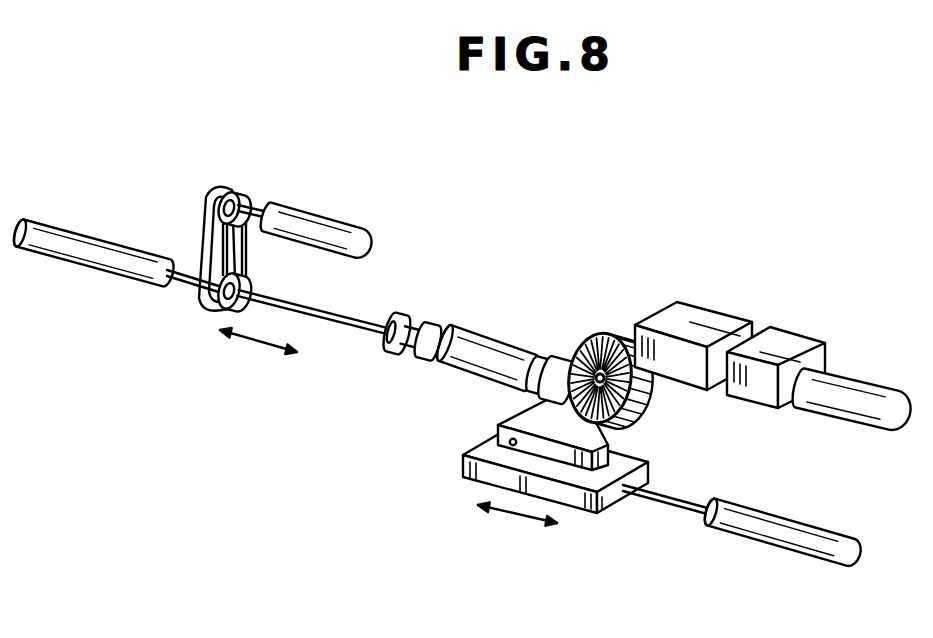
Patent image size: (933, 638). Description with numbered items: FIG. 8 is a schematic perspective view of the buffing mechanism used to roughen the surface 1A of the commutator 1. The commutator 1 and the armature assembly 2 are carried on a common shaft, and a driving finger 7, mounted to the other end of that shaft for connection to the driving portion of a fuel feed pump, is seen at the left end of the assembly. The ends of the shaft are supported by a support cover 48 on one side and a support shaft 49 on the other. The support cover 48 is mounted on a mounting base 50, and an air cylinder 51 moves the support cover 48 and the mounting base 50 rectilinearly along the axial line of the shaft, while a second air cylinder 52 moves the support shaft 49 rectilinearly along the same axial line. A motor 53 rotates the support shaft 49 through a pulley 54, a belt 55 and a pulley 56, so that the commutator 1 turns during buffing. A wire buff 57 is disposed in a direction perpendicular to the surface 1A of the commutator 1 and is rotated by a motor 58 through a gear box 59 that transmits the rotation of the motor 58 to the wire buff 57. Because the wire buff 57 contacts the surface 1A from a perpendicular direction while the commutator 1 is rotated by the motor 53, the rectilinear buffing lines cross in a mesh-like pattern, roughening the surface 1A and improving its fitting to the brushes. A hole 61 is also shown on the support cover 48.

The commutator 1 is at (505, 368).
The surface of the commutator 1A is at (562, 350).
The armature assembly 2 is at (490, 324).
The driving finger 7 is at (432, 320).
The support cover 48 is at (605, 430).
The support shaft 49 is at (350, 338).
The mounting base 50 is at (610, 504).
The air cylinder 51 is at (762, 543).
The air cylinder 52 is at (100, 272).
The motor 53 is at (326, 212).
The pulley 54 is at (236, 196).
The belt 55 is at (201, 228).
The pulley 56 is at (227, 308).
The wire buff 57 is at (600, 334).
The motor 58 is at (852, 370).
The gear box 59 is at (705, 309).
The pivot hole 61 is at (490, 433).